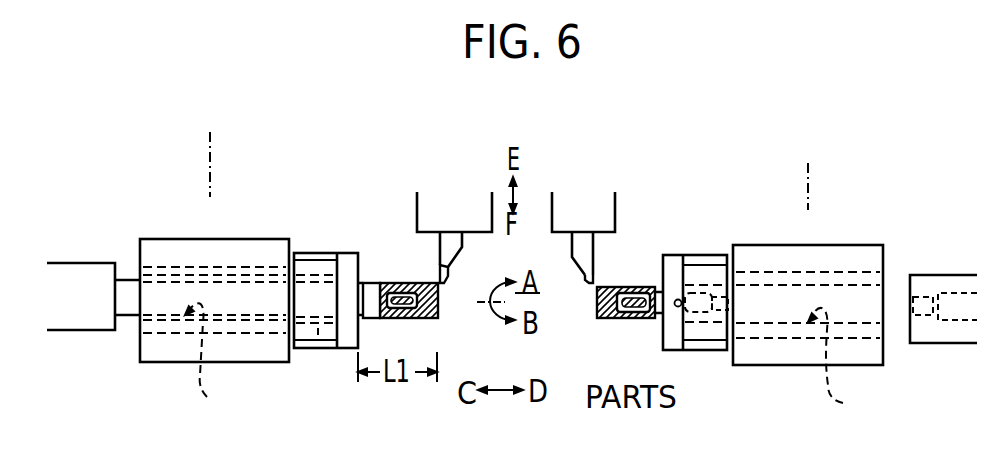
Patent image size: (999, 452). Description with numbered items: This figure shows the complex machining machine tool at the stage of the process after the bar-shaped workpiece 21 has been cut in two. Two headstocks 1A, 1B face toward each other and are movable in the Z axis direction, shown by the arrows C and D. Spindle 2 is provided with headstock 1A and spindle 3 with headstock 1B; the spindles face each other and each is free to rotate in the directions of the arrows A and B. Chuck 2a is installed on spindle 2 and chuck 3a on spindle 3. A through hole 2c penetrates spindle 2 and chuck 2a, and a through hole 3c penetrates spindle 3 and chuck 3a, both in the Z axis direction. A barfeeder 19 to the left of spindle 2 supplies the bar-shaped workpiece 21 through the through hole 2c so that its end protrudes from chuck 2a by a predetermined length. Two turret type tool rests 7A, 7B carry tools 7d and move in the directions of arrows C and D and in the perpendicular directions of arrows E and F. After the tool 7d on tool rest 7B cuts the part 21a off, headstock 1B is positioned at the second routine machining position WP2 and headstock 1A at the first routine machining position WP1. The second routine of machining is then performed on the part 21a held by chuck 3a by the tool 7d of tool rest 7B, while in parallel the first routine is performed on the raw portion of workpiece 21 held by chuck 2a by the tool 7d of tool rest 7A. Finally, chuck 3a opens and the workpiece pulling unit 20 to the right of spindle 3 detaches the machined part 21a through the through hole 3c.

The barfeeder 19 is at (82, 254).
The headstock 1A is at (230, 230).
The spindle 2 is at (292, 252).
The chuck 2a is at (314, 253).
The through hole 2c is at (211, 361).
The bar-shaped workpiece 21 is at (391, 324).
The turret type tool rest 7A is at (410, 200).
The tool 7d is at (462, 248).
The turret type tool rest 7B is at (620, 204).
The part 21a is at (628, 325).
The spindle 3 is at (727, 256).
The chuck 3a is at (693, 255).
The through hole 3c is at (842, 367).
The headstock 1B is at (773, 237).
The workpiece pulling unit 20 is at (942, 267).
The first routine machining position WP1 is at (215, 142).
The second routine machining position WP2 is at (810, 169).